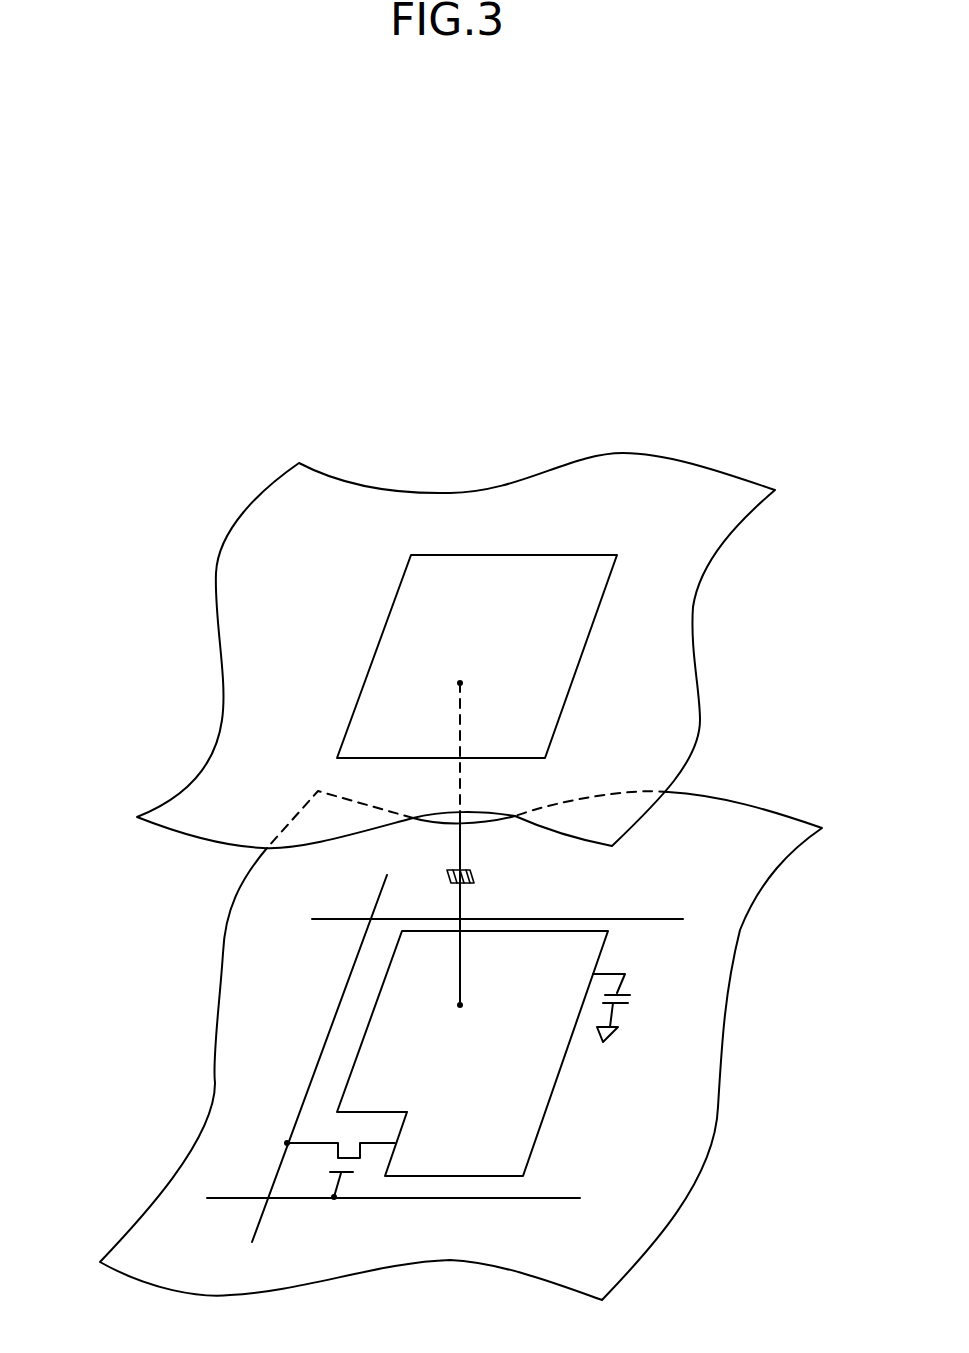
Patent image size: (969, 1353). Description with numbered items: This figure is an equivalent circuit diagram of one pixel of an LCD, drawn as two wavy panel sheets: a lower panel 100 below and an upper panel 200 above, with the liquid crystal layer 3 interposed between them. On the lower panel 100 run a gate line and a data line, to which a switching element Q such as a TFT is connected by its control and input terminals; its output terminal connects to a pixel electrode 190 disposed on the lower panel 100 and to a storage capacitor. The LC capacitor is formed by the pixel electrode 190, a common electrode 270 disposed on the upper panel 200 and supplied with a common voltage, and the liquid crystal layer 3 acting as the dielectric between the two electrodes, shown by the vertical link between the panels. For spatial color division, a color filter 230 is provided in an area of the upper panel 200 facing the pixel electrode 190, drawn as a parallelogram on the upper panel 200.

The liquid crystal layer 3 is at (122, 931).
The lower panel 100 is at (744, 1020).
The pixel electrode 190 is at (547, 1107).
The upper panel 200 is at (716, 683).
The color filter 230 is at (578, 673).
The common electrode 270 is at (695, 622).